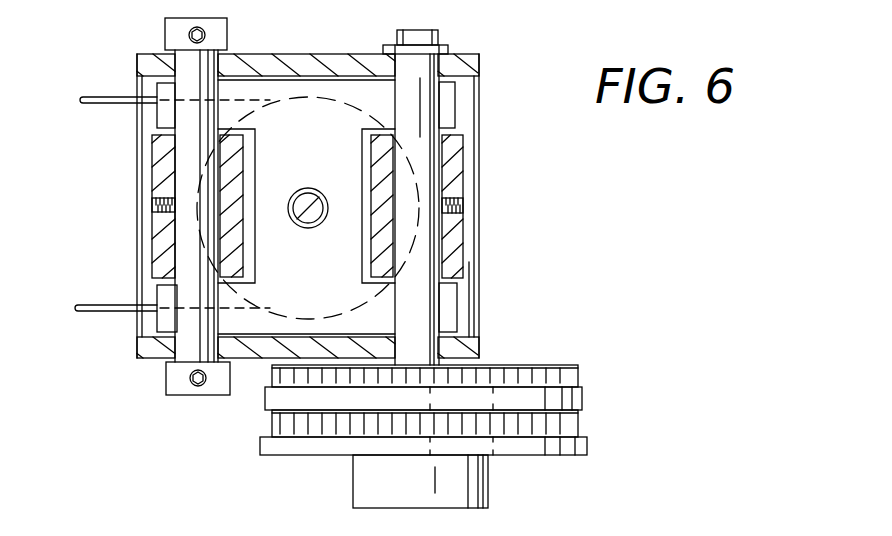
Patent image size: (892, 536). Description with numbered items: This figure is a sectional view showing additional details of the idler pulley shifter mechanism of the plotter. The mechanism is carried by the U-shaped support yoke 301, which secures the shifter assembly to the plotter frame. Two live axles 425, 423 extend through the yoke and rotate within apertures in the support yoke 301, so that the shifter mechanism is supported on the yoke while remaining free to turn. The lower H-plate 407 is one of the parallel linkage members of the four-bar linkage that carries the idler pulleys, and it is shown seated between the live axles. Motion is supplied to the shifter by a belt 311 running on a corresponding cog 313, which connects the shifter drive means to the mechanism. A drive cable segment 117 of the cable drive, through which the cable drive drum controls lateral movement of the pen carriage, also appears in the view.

The drive cable segment 117 is at (100, 100).
The U-shaped support yoke 301 is at (474, 62).
The belt 311 is at (572, 400).
The cog 313 is at (570, 373).
The lower H-plate 407 is at (446, 313).
The live axle 423 is at (420, 100).
The live axle 425 is at (206, 72).